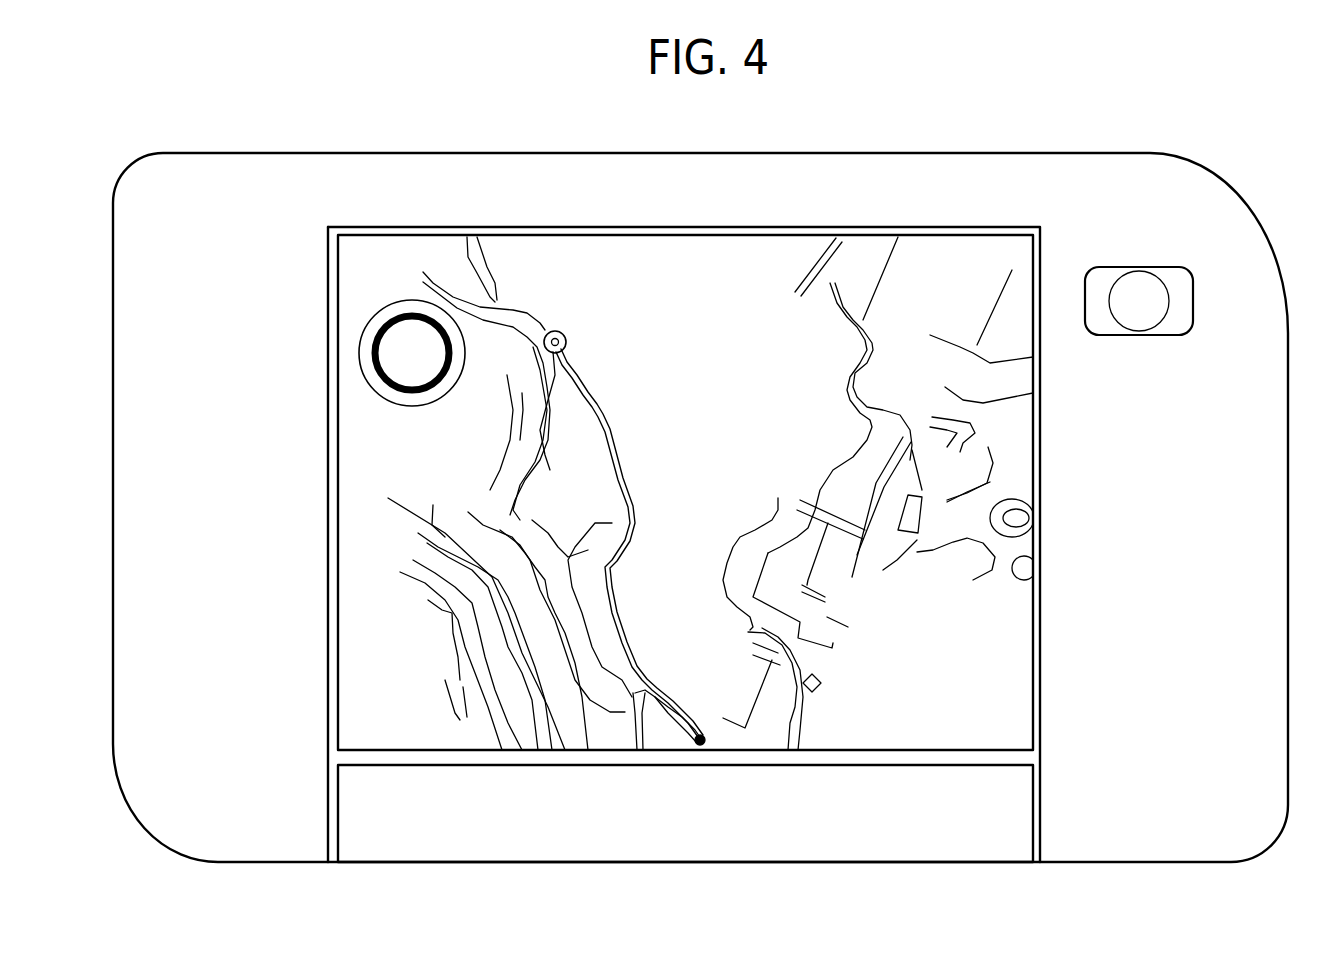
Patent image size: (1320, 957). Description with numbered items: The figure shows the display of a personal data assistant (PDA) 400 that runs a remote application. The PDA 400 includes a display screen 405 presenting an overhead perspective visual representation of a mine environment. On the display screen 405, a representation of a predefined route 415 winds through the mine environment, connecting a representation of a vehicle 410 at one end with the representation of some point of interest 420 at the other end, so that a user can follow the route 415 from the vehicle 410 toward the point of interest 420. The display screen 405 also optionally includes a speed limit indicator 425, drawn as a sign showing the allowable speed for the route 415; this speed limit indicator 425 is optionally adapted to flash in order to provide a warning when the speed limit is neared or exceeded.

The personal data assistant (PDA) 400 is at (1082, 143).
The display screen 405 is at (1037, 476).
The vehicle 410 is at (695, 746).
The predefined route 415 is at (612, 444).
The point of interest 420 is at (567, 337).
The speed limit indicator 425 is at (361, 341).